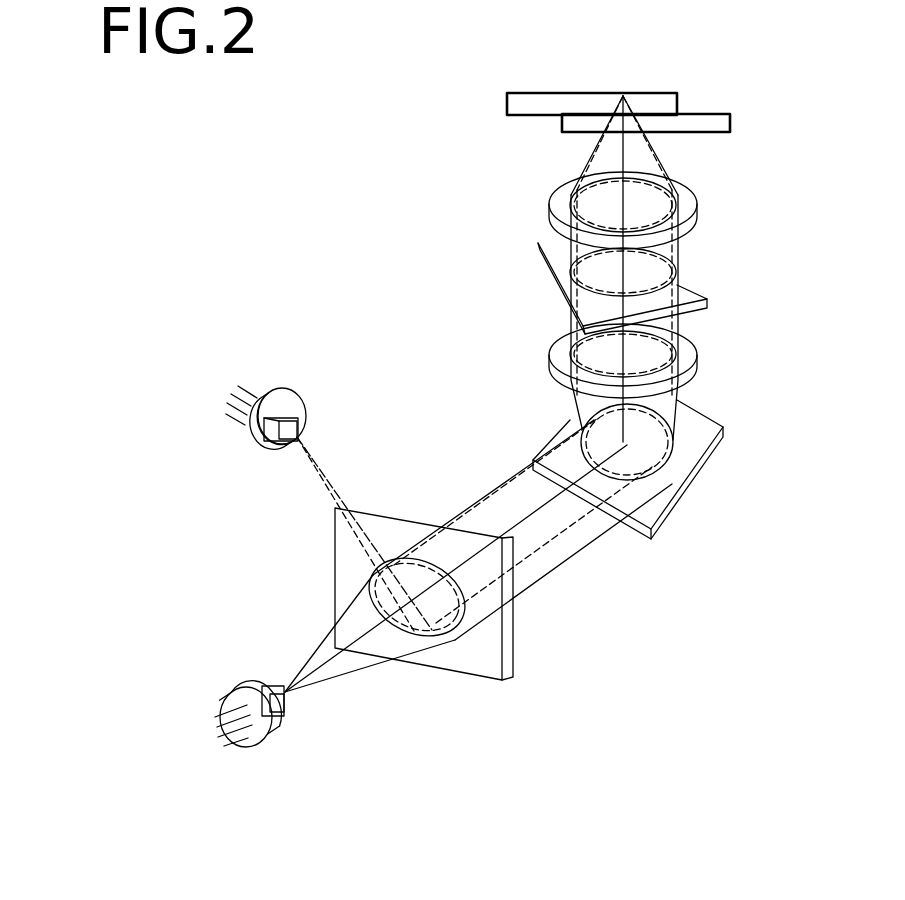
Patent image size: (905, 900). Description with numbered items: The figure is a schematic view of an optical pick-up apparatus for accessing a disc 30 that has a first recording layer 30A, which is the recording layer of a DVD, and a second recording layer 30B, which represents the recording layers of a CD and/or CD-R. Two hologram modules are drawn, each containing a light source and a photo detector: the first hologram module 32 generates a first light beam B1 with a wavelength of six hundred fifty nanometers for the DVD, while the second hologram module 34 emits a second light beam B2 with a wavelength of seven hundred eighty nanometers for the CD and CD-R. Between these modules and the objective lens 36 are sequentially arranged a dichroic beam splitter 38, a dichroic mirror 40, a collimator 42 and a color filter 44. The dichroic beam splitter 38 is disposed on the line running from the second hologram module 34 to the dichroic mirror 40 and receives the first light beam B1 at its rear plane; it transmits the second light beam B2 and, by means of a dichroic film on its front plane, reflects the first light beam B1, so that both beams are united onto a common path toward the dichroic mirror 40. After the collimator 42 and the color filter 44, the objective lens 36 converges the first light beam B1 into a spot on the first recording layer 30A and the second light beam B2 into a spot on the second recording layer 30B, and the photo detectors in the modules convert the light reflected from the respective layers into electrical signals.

The disc 30 is at (545, 26).
The first recording layer 30A is at (731, 116).
The second recording layer 30B is at (676, 96).
The first hologram module 32 is at (300, 398).
The second hologram module 34 is at (250, 687).
The objective lens 36 is at (697, 192).
The dichroic beam splitter 38 is at (515, 652).
The dichroic mirror 40 is at (720, 425).
The collimator 42 is at (697, 350).
The color filter 44 is at (708, 300).
The first light beam B1 is at (340, 477).
The second light beam B2 is at (338, 677).